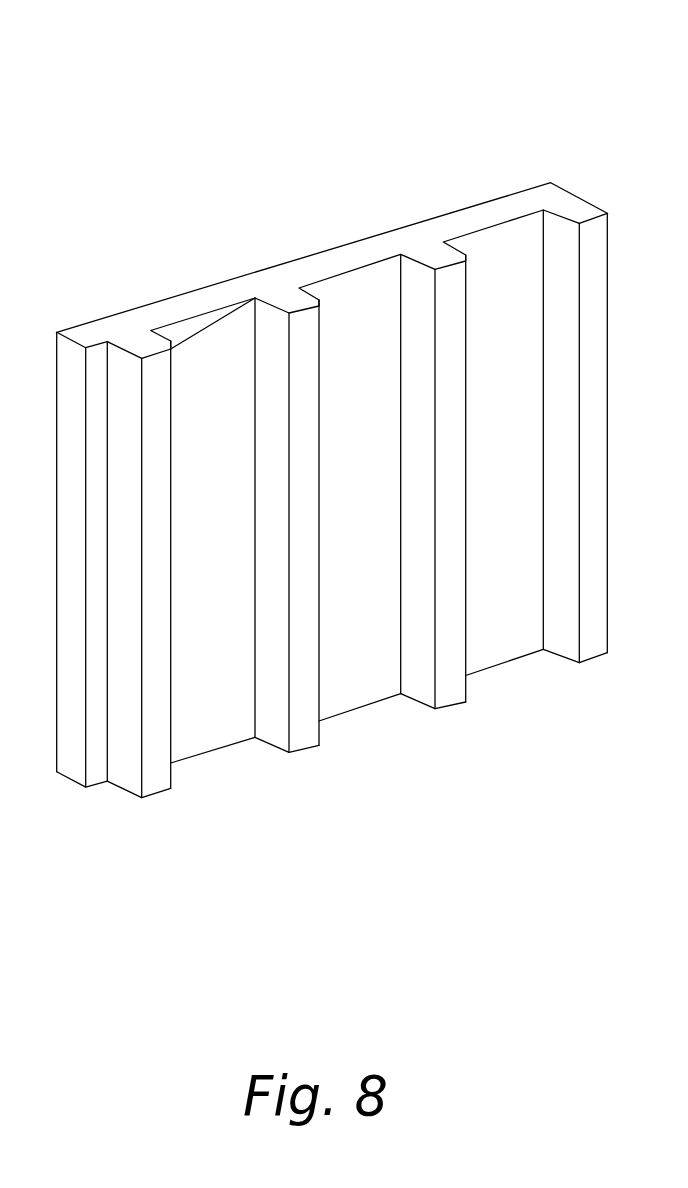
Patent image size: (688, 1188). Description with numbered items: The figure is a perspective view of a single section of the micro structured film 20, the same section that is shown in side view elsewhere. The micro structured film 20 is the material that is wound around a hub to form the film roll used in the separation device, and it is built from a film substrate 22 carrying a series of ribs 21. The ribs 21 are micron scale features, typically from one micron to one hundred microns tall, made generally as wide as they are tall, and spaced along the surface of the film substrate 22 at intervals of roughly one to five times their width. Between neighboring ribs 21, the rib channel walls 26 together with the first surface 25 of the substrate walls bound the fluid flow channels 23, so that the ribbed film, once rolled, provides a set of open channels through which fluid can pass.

The micro structured film 20 is at (318, 490).
The ribs 21 is at (292, 302).
The film substrate 22 is at (330, 262).
The fluid flow channels 23 is at (368, 715).
The first surface 25 is at (348, 602).
The rib channel walls 26 is at (415, 598).